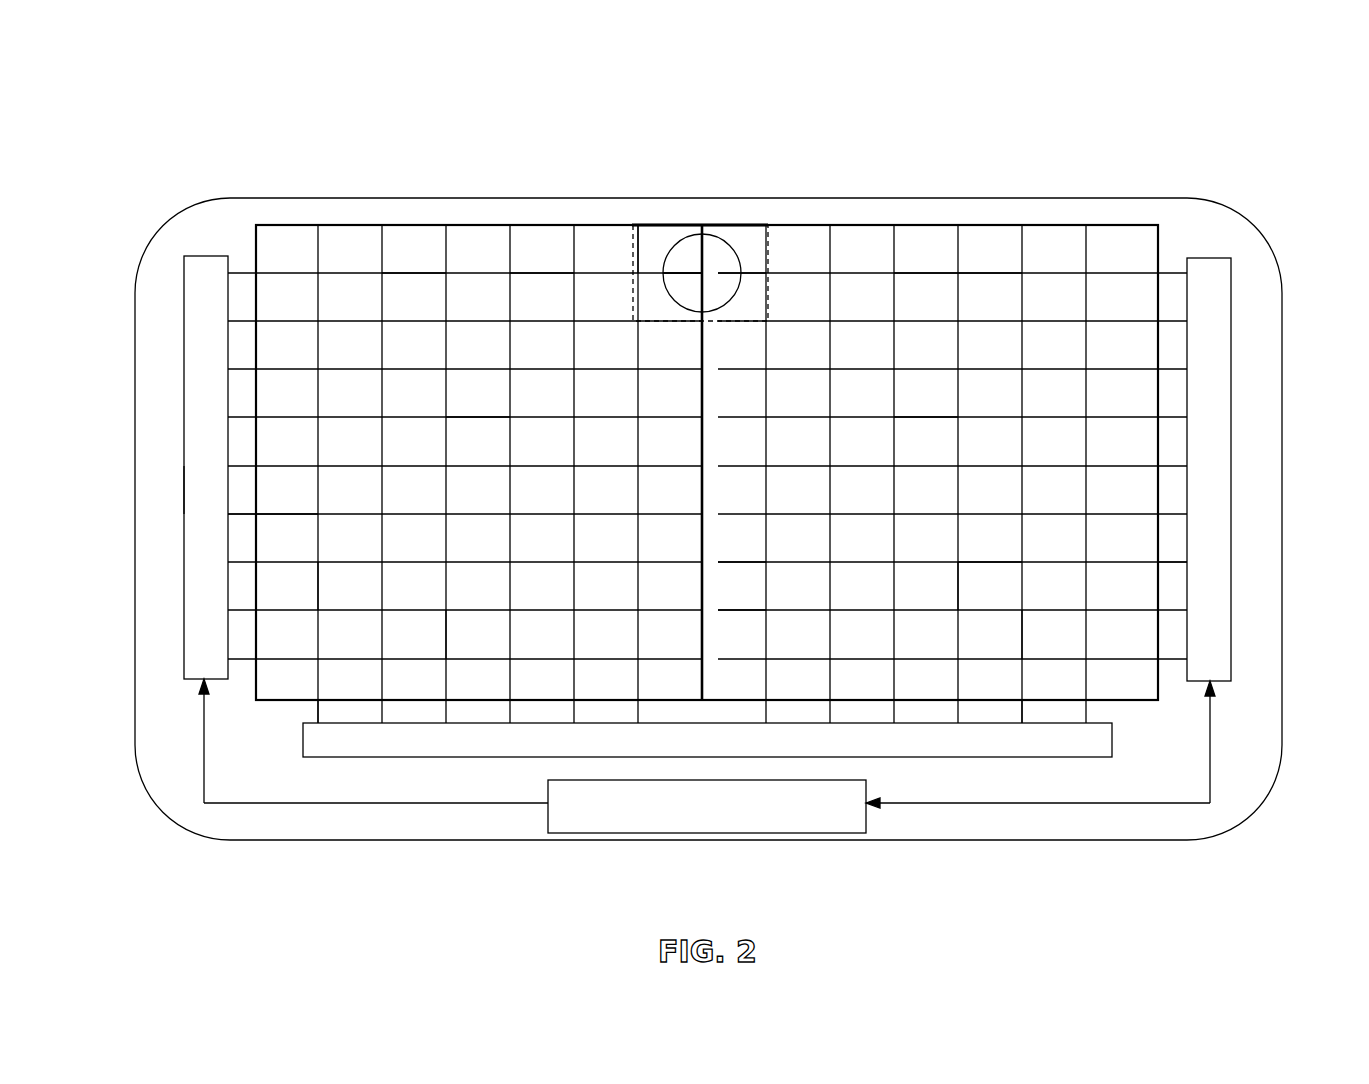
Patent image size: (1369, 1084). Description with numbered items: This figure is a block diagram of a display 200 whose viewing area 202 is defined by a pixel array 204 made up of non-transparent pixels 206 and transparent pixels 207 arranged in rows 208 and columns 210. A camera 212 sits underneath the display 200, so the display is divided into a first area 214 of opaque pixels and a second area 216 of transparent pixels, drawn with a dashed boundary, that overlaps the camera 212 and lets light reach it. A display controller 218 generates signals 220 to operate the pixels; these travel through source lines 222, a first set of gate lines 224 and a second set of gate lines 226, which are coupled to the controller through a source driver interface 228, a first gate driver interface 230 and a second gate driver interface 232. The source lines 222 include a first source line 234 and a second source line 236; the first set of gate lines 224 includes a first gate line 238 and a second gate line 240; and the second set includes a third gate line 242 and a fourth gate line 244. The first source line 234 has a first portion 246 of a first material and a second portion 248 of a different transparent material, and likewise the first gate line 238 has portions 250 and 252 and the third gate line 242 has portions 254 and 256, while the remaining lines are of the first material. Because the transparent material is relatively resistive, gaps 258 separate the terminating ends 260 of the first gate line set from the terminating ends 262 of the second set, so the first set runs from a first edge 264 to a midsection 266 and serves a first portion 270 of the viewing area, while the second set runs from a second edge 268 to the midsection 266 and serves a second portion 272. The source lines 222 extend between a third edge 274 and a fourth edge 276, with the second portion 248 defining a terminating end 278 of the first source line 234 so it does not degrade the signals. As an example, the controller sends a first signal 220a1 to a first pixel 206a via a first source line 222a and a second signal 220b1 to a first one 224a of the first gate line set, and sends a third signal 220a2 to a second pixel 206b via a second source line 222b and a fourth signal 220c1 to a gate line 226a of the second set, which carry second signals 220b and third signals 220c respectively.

The display 200 is at (1184, 136).
The viewing area 202 is at (402, 212).
The pixel array 204 is at (973, 208).
The non-transparent pixels 206 is at (283, 238).
The first pixel 206a is at (288, 538).
The second pixel 206b is at (991, 586).
The transparent pixels 207 is at (655, 240).
The rows 208 is at (255, 298).
The columns 210 is at (537, 225).
The camera 212 is at (684, 236).
The first area 214 is at (283, 702).
The second area 216 is at (743, 238).
The display controller 218 is at (633, 834).
The signals 220 is at (845, 778).
The first signal 220a1 is at (319, 706).
The third signal 220a2 is at (1023, 708).
The second signals 220b is at (423, 803).
The second signal 220b1 is at (244, 514).
The third signals 220c is at (1157, 808).
The fourth signal 220c1 is at (1163, 563).
The source lines 222 is at (702, 474).
The first source line 222a is at (318, 598).
The second source line 222b is at (1022, 635).
The first set of gate lines 224 is at (465, 466).
The first one of the first set of gate lines 224a is at (284, 514).
The second set of gate lines 226 is at (952, 466).
The second gate line segment 226a is at (985, 562).
The source driver interface 228 is at (488, 758).
The first gate driver interface 230 is at (184, 470).
The second gate driver interface 232 is at (1233, 488).
The first source line 234 is at (702, 632).
The second source line 236 is at (447, 633).
The first gate line 238 is at (408, 275).
The second gate line 240 is at (487, 420).
The third gate line 242 is at (983, 278).
The fourth gate line 244 is at (920, 420).
The first portion 246 is at (702, 402).
The second portion 248 is at (702, 297).
The first portion 250 is at (548, 298).
The second portion 252 is at (660, 280).
The first portion 254 is at (914, 277).
The second portion 256 is at (745, 275).
The gaps 258 is at (720, 624).
The terminating ends 260 is at (702, 510).
The terminating ends 262 is at (718, 563).
The first edge 264 is at (255, 247).
The midsection 266 is at (702, 450).
The second edge 268 is at (1160, 690).
The first portion 270 is at (445, 160).
The second portion 272 is at (1040, 155).
The third edge 274 is at (1132, 702).
The fourth edge 276 is at (1058, 225).
The terminating end 278 is at (715, 236).